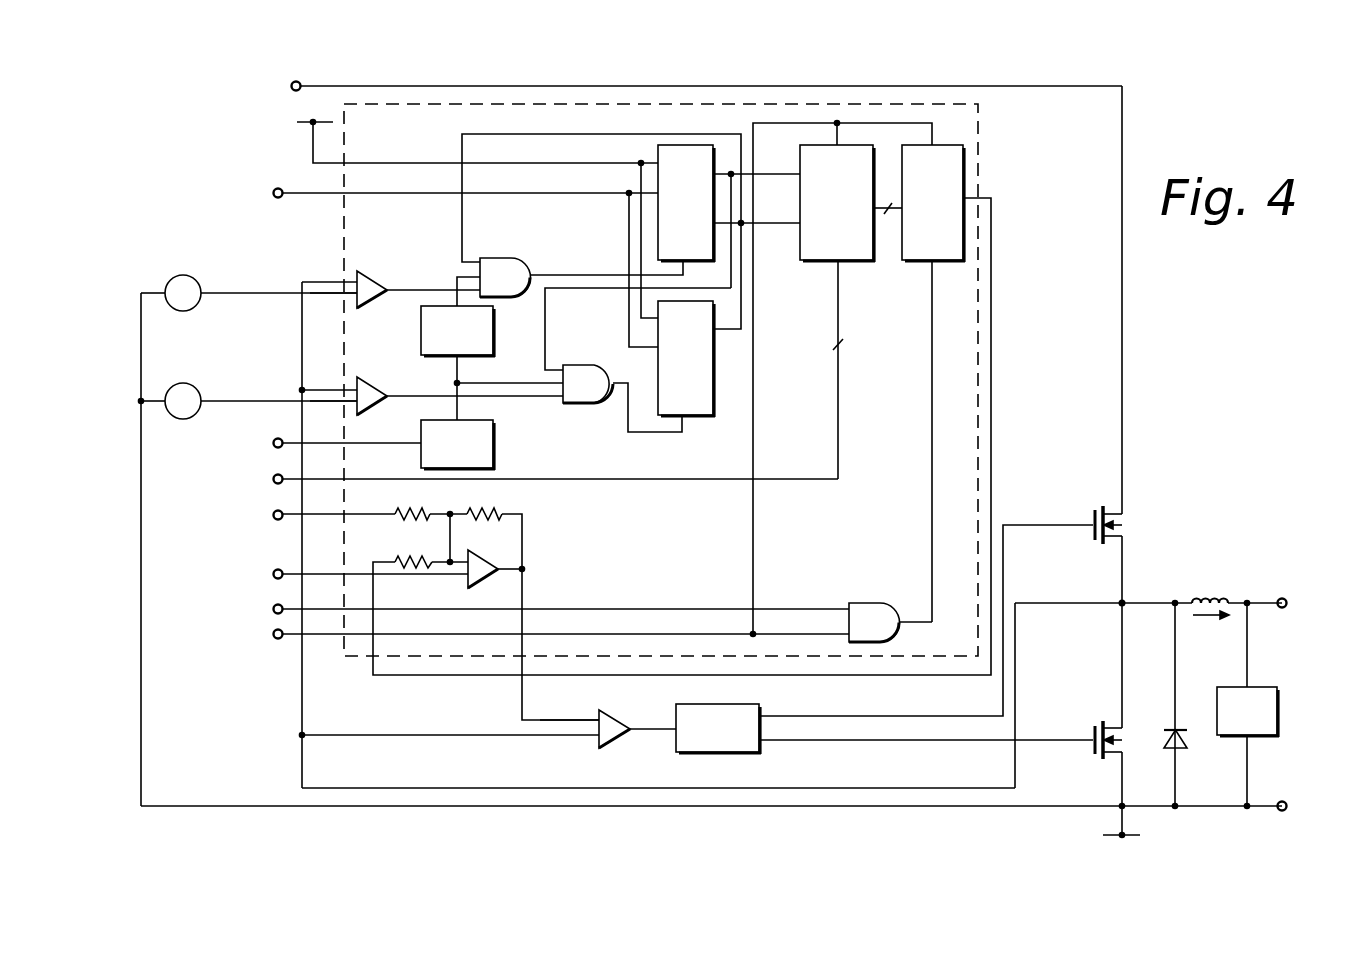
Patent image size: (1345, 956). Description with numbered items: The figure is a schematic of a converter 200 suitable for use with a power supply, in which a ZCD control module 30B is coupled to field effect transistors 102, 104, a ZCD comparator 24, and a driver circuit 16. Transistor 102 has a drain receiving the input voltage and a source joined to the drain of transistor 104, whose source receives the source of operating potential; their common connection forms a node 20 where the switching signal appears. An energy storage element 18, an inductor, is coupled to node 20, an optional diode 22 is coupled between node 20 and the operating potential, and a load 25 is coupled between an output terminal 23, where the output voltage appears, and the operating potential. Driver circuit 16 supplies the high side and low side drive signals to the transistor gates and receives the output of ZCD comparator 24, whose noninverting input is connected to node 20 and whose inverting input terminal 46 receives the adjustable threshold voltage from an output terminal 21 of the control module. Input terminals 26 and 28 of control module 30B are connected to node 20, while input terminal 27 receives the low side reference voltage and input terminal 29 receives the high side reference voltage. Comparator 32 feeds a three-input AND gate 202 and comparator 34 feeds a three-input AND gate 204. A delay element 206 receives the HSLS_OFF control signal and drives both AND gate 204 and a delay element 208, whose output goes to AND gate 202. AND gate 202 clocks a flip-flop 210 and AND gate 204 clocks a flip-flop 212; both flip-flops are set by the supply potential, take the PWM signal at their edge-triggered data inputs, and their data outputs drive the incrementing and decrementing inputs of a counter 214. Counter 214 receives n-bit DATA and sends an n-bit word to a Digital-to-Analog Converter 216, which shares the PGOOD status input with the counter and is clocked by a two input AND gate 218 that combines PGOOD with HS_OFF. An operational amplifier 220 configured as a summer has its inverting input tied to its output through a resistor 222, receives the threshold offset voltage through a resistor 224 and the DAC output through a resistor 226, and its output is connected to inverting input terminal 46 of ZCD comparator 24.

The converter 200 is at (1243, 277).
The ZCD control module 30B is at (980, 143).
The input terminal 26 is at (340, 282).
The input terminal 27 is at (340, 294).
The input terminal 28 is at (340, 389).
The input terminal 29 is at (340, 402).
The comparator 32 is at (369, 308).
The comparator 34 is at (383, 404).
The three-input AND gate 202 is at (495, 258).
The three-input AND gate 204 is at (582, 404).
The delay element 206 is at (495, 444).
The delay element 208 is at (424, 358).
The flip-flop 210 is at (658, 152).
The flip-flop 212 is at (716, 402).
The counter 214 is at (809, 261).
The Digital-to-Analog Converter 216 is at (917, 261).
The output terminal 21 is at (991, 198).
The two input AND gate 218 is at (866, 603).
The operational amplifier 220 is at (468, 586).
The resistor 222 is at (495, 512).
The resistor 224 is at (400, 510).
The resistor 226 is at (409, 557).
The inverting input terminal 46 is at (592, 720).
The Zero Current Detection comparator 24 is at (620, 743).
The driver circuit 16 is at (712, 704).
The field effect transistor 102 is at (1112, 520).
The field effect transistor 104 is at (1112, 734).
The node 20 is at (1120, 603).
The energy storage element 18 is at (1218, 593).
The diode 22 is at (1188, 731).
The output terminal 23 is at (1282, 611).
The load 25 is at (1279, 704).